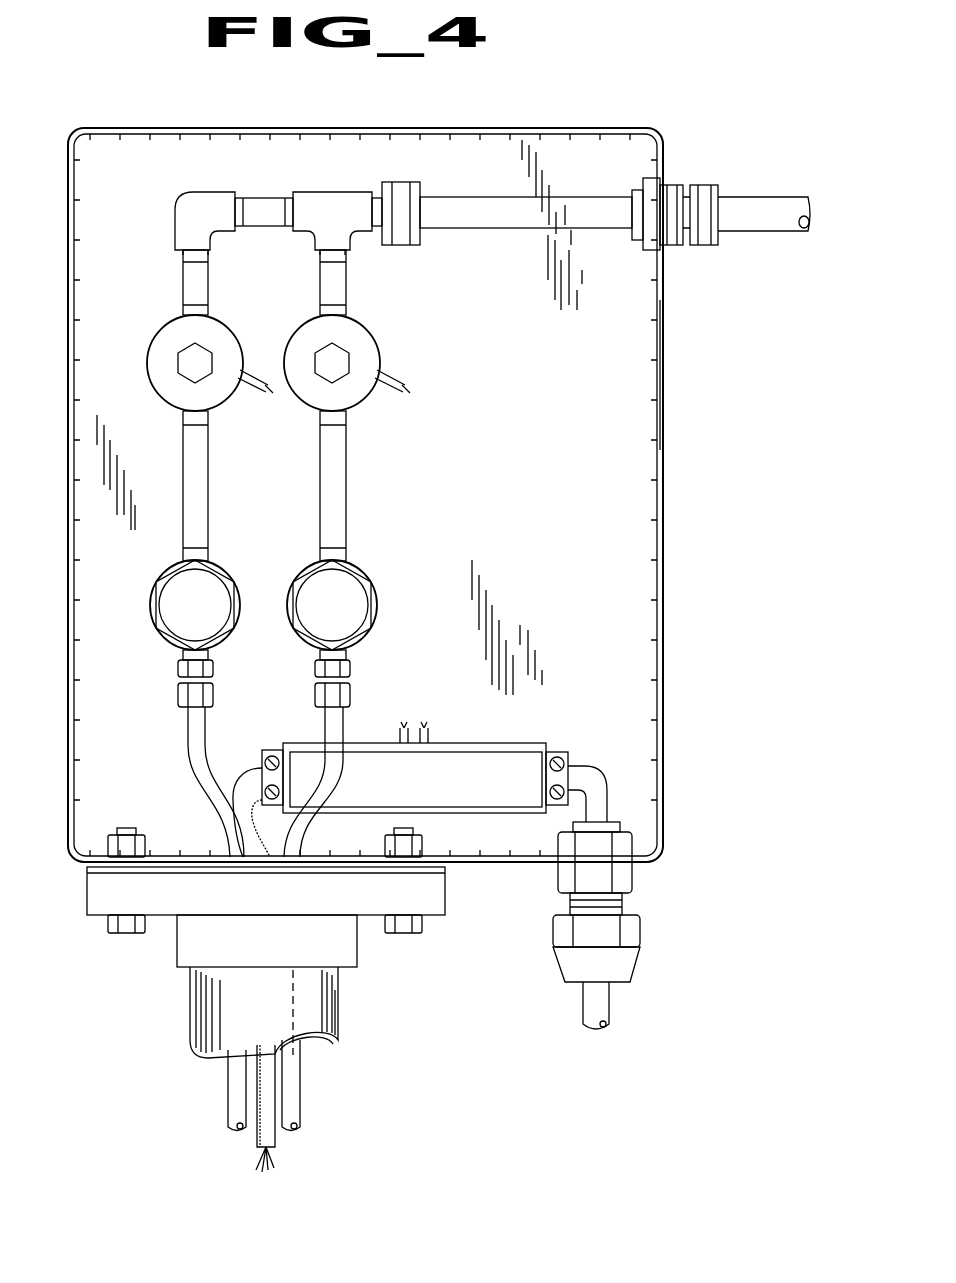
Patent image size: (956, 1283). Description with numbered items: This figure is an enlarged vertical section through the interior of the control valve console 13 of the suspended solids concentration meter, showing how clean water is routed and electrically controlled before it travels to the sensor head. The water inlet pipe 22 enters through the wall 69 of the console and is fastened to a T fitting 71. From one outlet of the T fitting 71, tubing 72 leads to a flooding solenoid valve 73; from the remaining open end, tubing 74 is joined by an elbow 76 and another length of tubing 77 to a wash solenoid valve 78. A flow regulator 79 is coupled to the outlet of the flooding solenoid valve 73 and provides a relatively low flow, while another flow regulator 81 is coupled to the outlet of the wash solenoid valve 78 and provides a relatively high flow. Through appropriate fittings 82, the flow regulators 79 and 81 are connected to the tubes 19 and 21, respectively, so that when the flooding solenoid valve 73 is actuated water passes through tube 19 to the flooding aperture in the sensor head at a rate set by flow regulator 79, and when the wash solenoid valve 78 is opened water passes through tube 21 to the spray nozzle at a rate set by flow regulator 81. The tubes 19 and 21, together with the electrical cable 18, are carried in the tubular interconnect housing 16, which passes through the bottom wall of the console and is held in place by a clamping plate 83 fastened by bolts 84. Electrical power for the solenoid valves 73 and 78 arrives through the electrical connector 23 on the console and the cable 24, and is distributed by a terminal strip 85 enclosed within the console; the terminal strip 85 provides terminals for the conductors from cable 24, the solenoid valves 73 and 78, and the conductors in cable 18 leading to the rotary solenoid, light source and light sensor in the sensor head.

The control valve console 13 is at (650, 126).
The tubular interconnect housing 16 is at (193, 1012).
The electrical cable 18 is at (262, 1141).
The tube 19 is at (328, 728).
The tube 21 is at (200, 720).
The water inlet pipe 22 is at (755, 204).
The electrical connector 23 is at (625, 973).
The electrical cable 24 is at (598, 1013).
The wall 69 is at (664, 377).
The T fitting 71 is at (342, 223).
The tubing 72 is at (330, 296).
The flooding solenoid valve 73 is at (318, 395).
The tubing 74 is at (260, 202).
The elbow 76 is at (208, 223).
The tubing 77 is at (200, 292).
The wash solenoid valve 78 is at (218, 398).
The flow regulator 79 is at (316, 592).
The flow regulator 81 is at (213, 587).
The fittings 82 is at (320, 695).
The clamping plate 83 is at (100, 888).
The bolts 84 is at (125, 933).
The terminal strip 85 is at (417, 784).